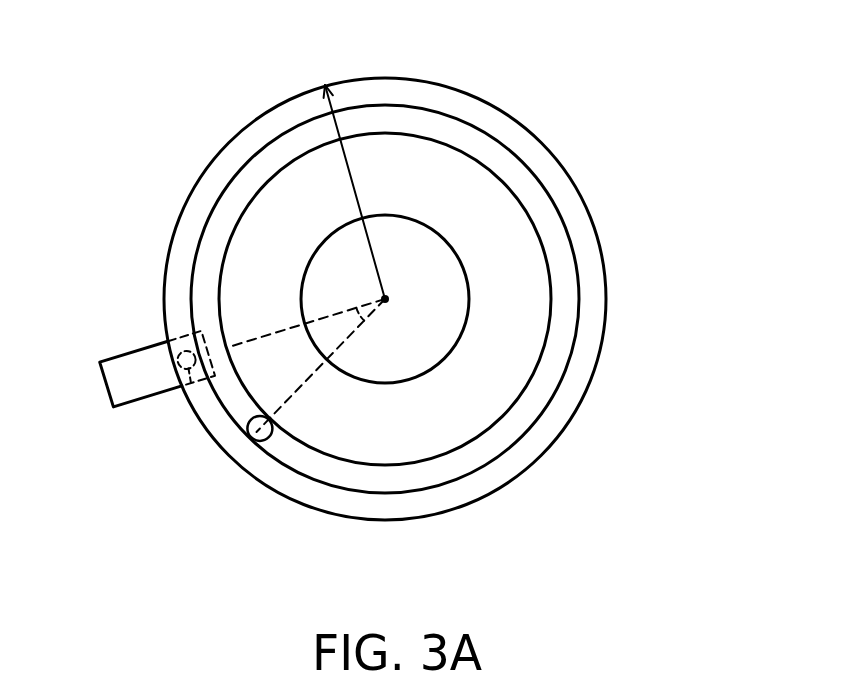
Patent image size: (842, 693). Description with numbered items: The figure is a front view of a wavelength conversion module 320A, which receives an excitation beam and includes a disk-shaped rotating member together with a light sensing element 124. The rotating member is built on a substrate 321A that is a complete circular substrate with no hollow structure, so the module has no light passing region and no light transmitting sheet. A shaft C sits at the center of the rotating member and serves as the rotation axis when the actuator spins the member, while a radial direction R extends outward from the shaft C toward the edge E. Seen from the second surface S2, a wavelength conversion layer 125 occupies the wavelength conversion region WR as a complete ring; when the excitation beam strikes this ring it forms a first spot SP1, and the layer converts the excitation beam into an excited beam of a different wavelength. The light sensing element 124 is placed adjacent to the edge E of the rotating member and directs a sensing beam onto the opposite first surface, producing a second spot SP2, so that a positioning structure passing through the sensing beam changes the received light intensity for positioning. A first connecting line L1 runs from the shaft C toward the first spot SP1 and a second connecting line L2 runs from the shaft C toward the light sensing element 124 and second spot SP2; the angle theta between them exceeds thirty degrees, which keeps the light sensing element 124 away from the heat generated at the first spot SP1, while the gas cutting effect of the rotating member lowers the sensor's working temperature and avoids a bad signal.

The light sensing element 124 is at (117, 380).
The wavelength conversion layer 125 is at (565, 270).
The substrate 321A is at (575, 215).
The wavelength conversion module 320A is at (678, 558).
The shaft C is at (385, 299).
The radial direction R is at (338, 122).
The edge E is at (203, 172).
The second surface S2 is at (422, 172).
The wavelength conversion region WR is at (497, 168).
The first spot SP1 is at (252, 439).
The second spot SP2 is at (186, 386).
The first connecting line L1 is at (304, 376).
The second connecting line L2 is at (252, 338).
The angle theta is at (346, 327).